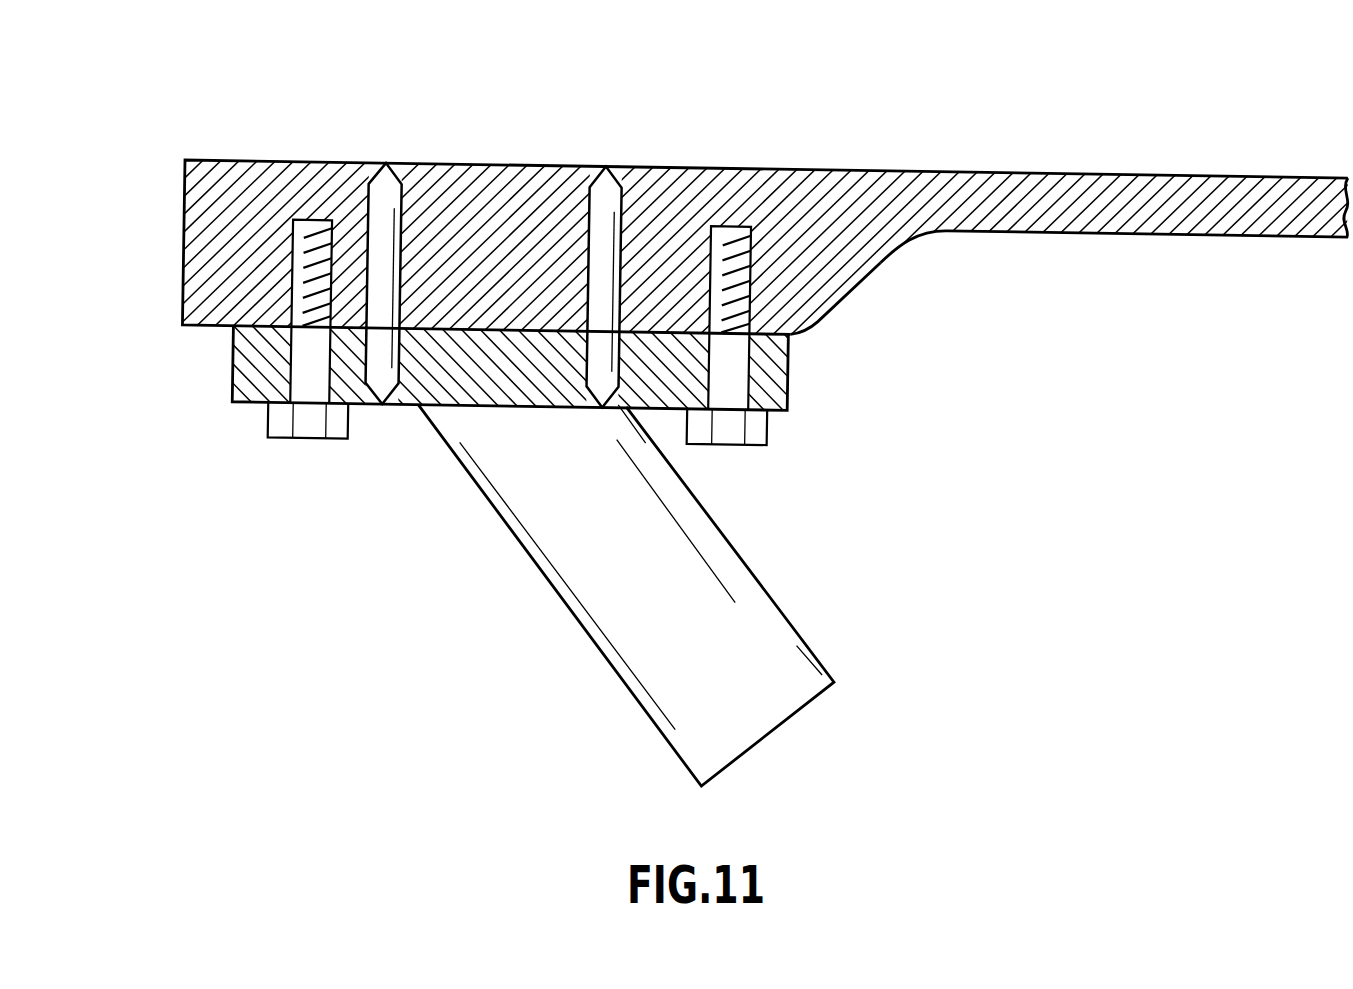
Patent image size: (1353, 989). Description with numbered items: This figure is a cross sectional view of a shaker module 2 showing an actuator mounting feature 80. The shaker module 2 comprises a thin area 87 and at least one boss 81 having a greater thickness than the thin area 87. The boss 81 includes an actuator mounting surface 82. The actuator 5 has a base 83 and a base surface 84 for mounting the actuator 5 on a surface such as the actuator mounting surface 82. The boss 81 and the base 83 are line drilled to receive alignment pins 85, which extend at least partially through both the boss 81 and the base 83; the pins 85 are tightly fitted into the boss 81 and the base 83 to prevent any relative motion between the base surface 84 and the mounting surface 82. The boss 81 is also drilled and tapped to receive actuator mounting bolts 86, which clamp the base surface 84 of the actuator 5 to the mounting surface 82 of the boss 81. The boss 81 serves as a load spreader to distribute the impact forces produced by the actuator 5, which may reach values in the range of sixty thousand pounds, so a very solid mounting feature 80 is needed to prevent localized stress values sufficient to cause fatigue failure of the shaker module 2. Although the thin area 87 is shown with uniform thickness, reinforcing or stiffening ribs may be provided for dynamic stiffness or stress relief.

The shaker module 2 is at (824, 243).
The actuator 5 is at (688, 611).
The actuator mounting feature 80 is at (931, 241).
The boss 81 is at (847, 293).
The actuator mounting surface 82 is at (260, 325).
The base 83 is at (236, 361).
The base surface 84 is at (515, 327).
The alignment pins 85 is at (393, 160).
The actuator mounting bolts 86 is at (311, 438).
The thin area 87 is at (1183, 220).